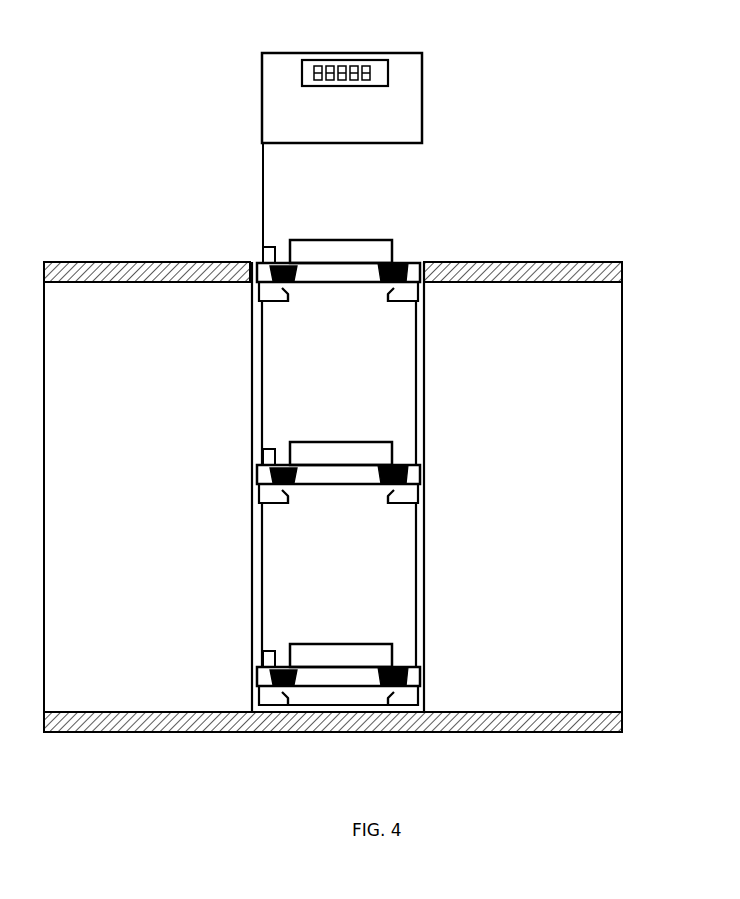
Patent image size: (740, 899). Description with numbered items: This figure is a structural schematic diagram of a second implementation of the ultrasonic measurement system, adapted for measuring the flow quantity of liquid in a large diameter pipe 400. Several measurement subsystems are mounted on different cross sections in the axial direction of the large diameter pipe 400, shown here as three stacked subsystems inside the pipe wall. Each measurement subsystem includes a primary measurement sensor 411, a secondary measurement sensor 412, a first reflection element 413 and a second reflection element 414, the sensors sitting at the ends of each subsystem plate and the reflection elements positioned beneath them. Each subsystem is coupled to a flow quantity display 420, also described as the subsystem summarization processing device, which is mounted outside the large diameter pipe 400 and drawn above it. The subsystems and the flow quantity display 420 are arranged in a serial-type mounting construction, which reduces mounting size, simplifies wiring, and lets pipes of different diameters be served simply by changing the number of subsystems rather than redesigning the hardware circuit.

The large diameter pipe 400 is at (573, 268).
The flow quantity display 420 is at (421, 73).
The primary measurement sensor 411 is at (283, 267).
The secondary measurement sensor 412 is at (399, 263).
The first reflection element 413 is at (284, 298).
The second reflection element 414 is at (391, 299).